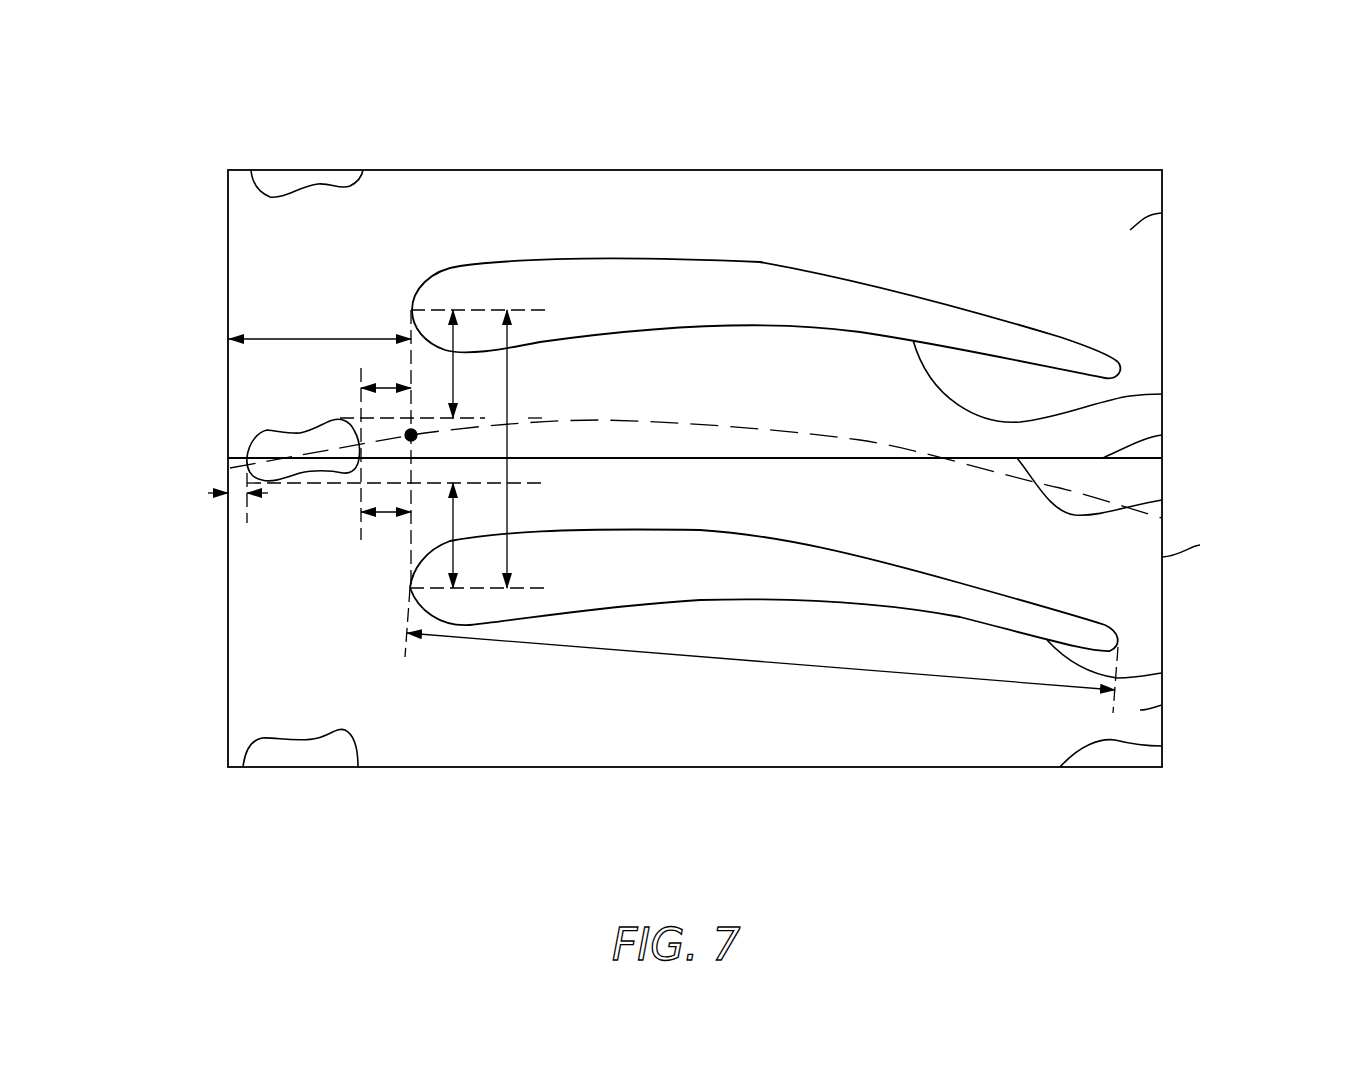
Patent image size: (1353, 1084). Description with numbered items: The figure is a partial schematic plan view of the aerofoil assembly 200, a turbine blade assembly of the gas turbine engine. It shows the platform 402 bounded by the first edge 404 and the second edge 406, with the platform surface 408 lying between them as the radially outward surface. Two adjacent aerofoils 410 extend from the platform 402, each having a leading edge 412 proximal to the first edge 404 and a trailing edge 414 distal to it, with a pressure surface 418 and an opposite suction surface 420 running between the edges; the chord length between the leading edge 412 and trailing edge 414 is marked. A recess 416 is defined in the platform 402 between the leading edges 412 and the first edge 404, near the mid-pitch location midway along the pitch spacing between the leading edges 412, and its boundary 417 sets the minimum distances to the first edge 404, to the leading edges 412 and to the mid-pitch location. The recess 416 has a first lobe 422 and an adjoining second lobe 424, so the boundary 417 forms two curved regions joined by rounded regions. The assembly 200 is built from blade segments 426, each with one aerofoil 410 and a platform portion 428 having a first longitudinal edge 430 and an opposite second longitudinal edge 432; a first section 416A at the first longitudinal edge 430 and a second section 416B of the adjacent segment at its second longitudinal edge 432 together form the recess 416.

The aerofoil assembly 200 is at (178, 118).
The platform 402 is at (537, 830).
The first edge 404 is at (228, 370).
The second edge 406 is at (1200, 545).
The platform surface 408 is at (293, 251).
The aerofoil 410 is at (812, 485).
The leading edge 412 is at (412, 307).
The trailing edge 414 is at (1120, 367).
The recess 416 is at (282, 488).
The first section 416A is at (308, 727).
The second section 416B is at (305, 192).
The boundary 417 is at (262, 432).
The pressure surface 418 is at (1162, 394).
The suction surface 420 is at (880, 283).
The first lobe 422 is at (343, 442).
The second lobe 424 is at (247, 453).
The blade segment 426 is at (205, 178).
The platform portion 428 is at (1162, 213).
The first longitudinal edge 430 is at (1162, 435).
The second longitudinal edge 432 is at (695, 170).